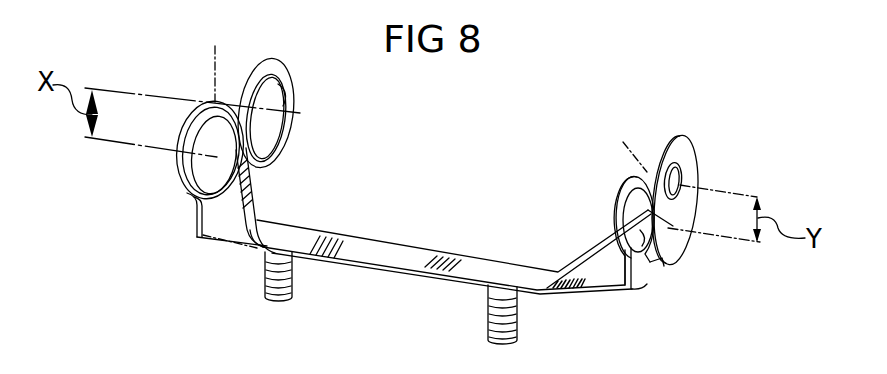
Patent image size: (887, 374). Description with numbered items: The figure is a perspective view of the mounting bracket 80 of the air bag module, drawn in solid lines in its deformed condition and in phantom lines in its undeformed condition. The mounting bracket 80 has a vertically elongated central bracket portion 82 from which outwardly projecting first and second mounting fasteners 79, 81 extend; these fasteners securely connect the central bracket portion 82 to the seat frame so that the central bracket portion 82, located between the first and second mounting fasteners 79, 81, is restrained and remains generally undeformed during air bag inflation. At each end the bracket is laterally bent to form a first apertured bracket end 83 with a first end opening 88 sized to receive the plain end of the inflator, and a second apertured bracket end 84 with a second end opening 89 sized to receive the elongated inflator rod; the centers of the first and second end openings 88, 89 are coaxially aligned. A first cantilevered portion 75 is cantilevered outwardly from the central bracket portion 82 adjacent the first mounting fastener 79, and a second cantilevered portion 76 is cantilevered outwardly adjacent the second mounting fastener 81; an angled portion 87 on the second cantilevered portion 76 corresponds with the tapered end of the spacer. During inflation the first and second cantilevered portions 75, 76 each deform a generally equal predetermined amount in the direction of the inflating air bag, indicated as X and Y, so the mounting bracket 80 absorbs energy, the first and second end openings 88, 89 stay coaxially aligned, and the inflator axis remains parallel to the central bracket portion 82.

The first cantilevered portion 75 is at (238, 222).
The second cantilevered portion 76 is at (587, 290).
The first mounting fastener 79 is at (262, 284).
The mounting bracket 80 is at (470, 234).
The second mounting fastener 81 is at (490, 304).
The central bracket portion 82 is at (382, 250).
The first apertured bracket end 83 is at (250, 78).
The second apertured bracket end 84 is at (667, 153).
The angled portion 87 is at (626, 262).
The first end opening 88 is at (193, 131).
The second end opening 89 is at (627, 211).